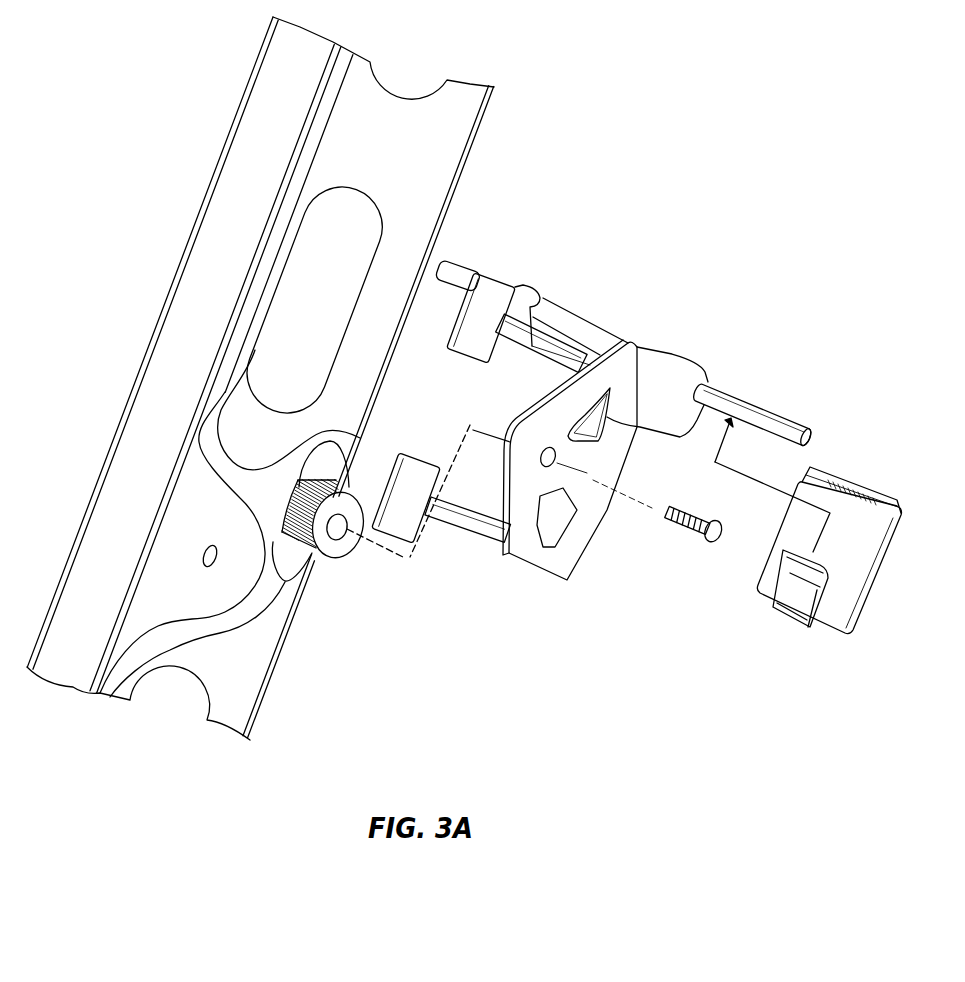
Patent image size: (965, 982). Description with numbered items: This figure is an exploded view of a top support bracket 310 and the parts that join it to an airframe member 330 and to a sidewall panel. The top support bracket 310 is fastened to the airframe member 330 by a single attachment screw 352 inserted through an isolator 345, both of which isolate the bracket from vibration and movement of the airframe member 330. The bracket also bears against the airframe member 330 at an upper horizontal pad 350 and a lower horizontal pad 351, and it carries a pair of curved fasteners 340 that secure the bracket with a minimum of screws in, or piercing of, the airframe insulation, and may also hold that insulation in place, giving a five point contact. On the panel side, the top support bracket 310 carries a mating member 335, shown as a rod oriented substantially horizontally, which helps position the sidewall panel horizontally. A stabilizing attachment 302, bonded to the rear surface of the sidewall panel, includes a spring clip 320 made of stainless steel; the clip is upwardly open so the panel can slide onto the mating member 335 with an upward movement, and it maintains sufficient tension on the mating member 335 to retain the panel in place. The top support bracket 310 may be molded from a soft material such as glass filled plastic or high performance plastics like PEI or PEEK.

The stabilizing attachment 302 is at (853, 577).
The top support bracket 310 is at (593, 500).
The spring clip 320 is at (793, 600).
The airframe member 330 is at (253, 668).
The mating member 335 is at (780, 420).
The curved fasteners 340 is at (485, 303).
The isolator 345 is at (343, 537).
The upper horizontal pad 350 is at (518, 330).
The lower horizontal pad 351 is at (483, 527).
The attachment screw 352 is at (710, 543).